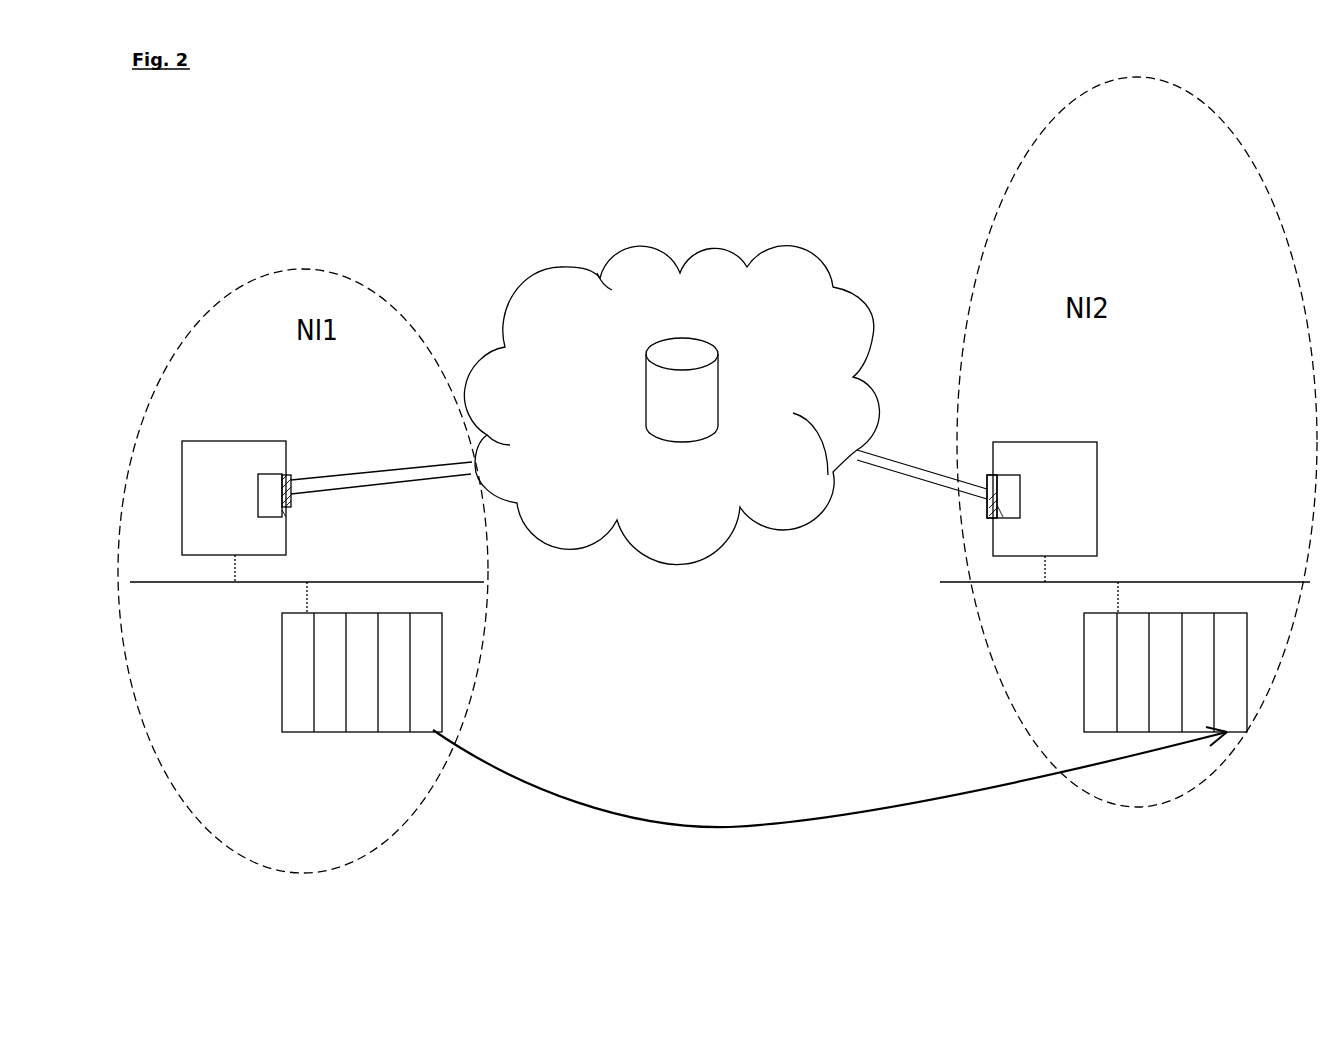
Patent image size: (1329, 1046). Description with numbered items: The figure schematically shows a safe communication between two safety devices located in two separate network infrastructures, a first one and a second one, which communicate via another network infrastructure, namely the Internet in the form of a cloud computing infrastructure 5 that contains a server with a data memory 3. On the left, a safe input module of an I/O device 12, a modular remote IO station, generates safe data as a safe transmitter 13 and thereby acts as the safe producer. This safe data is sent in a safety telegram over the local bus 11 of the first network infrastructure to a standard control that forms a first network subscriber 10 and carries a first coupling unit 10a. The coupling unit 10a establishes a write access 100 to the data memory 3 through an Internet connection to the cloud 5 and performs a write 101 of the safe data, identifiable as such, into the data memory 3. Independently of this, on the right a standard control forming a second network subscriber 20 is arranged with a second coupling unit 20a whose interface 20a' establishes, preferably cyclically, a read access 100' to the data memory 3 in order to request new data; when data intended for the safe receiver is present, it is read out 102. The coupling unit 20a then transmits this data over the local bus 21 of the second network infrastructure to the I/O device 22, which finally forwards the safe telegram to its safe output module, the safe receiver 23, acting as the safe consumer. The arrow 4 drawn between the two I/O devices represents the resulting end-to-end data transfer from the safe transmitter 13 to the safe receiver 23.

The cloud computing infrastructure 5 is at (687, 230).
The data memory 3 is at (710, 347).
The first network subscriber 10 is at (213, 440).
The first coupling unit 10a is at (292, 476).
The write access 100 is at (381, 444).
The write 101 is at (463, 475).
The local bus 11 is at (335, 581).
The I/O device 12 is at (282, 645).
The safe transmitter 13 is at (418, 661).
The data transfer 4 is at (830, 777).
The second network subscriber 20 is at (1012, 442).
The second coupling unit 20a is at (975, 523).
The interface 20a' is at (965, 512).
The read access 100' is at (922, 505).
The read or retrieve 102 is at (936, 463).
The local bus 21 is at (1137, 581).
The I/O device 22 is at (1083, 645).
The safe receiver 23 is at (1227, 672).